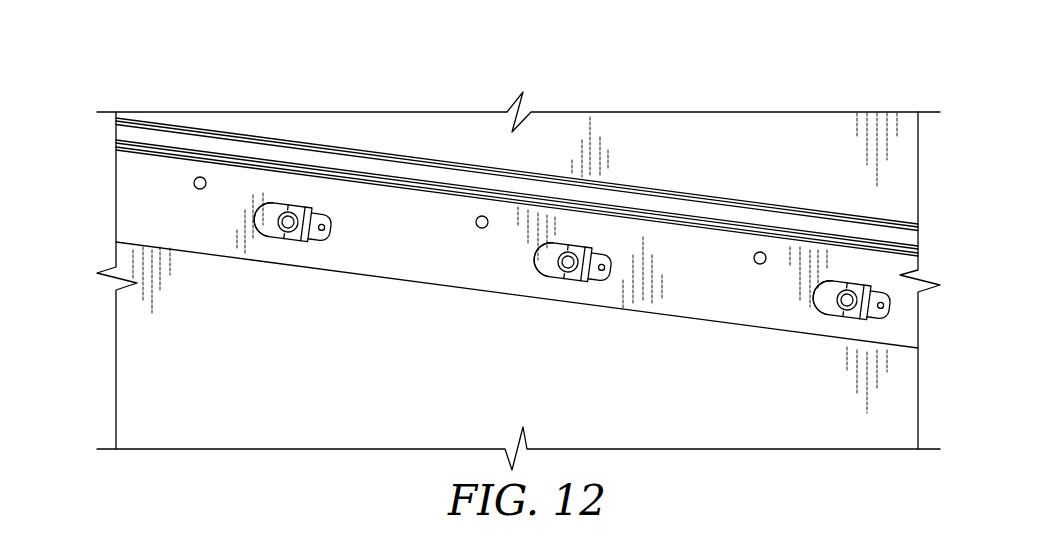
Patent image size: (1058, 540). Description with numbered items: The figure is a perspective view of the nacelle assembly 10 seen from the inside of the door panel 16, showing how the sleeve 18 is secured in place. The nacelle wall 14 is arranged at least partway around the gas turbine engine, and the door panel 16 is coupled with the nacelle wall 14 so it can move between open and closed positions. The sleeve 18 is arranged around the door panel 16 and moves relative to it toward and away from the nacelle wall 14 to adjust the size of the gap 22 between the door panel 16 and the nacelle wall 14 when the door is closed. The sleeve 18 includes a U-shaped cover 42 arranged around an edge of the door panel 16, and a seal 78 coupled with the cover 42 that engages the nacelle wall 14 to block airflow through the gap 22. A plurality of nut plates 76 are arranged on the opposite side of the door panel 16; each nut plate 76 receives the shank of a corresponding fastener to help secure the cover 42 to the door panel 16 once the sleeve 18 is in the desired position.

The nacelle assembly 10 is at (168, 82).
The nacelle wall 14 is at (807, 155).
The door panel 16 is at (103, 412).
The sleeve 18 is at (147, 205).
The gap 22 is at (463, 228).
The U-shaped cover 42 is at (152, 193).
The nut plate 76 is at (283, 236).
The seal 78 is at (900, 237).